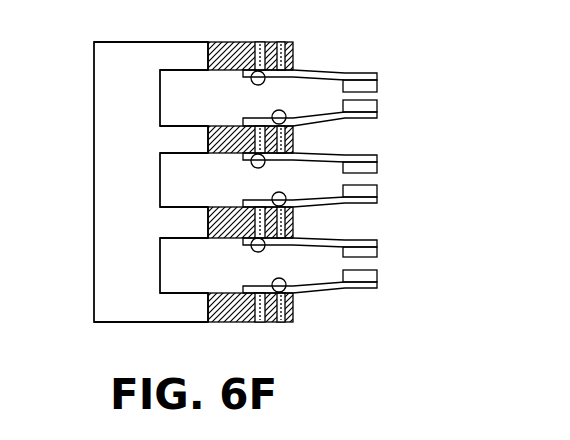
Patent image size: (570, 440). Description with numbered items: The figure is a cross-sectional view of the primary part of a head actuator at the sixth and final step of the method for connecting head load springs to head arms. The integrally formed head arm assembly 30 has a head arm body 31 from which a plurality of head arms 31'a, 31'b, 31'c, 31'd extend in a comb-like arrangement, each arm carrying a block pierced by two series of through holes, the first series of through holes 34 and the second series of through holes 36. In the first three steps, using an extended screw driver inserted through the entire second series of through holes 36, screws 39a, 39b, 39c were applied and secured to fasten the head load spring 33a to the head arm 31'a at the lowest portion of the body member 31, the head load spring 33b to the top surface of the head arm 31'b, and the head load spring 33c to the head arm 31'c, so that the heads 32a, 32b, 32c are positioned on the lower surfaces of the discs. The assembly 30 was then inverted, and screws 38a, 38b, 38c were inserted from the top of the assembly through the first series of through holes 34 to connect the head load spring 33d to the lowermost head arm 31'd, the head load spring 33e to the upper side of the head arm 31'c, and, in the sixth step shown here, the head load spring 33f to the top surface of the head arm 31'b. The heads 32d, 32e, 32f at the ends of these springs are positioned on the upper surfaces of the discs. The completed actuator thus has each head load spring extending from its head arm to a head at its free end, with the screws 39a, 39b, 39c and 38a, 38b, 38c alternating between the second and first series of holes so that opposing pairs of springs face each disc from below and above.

The head arm assembly 30 is at (110, 36).
The head arm body 31 is at (122, 182).
The head arm 31'a is at (157, 39).
The head arm 31'b is at (154, 137).
The head arm 31'c is at (154, 220).
The head arm 31'd is at (135, 327).
The head 32a is at (378, 80).
The head 32b is at (378, 168).
The head 32c is at (378, 254).
The head 32d is at (378, 283).
The head 32e is at (378, 192).
The head 32f is at (378, 103).
The head load spring 33a is at (345, 73).
The head load spring 33b is at (377, 155).
The head load spring 33c is at (377, 238).
The head load spring 33d is at (333, 287).
The head load spring 33e is at (332, 203).
The head load spring 33f is at (332, 118).
The first series of through holes 34 is at (290, 323).
The second series of through holes 36 is at (258, 324).
The screw 38a is at (277, 258).
The screw 38b is at (277, 175).
The screw 38c is at (277, 90).
The screw 39a is at (250, 80).
The screw 39b is at (250, 163).
The screw 39c is at (250, 247).